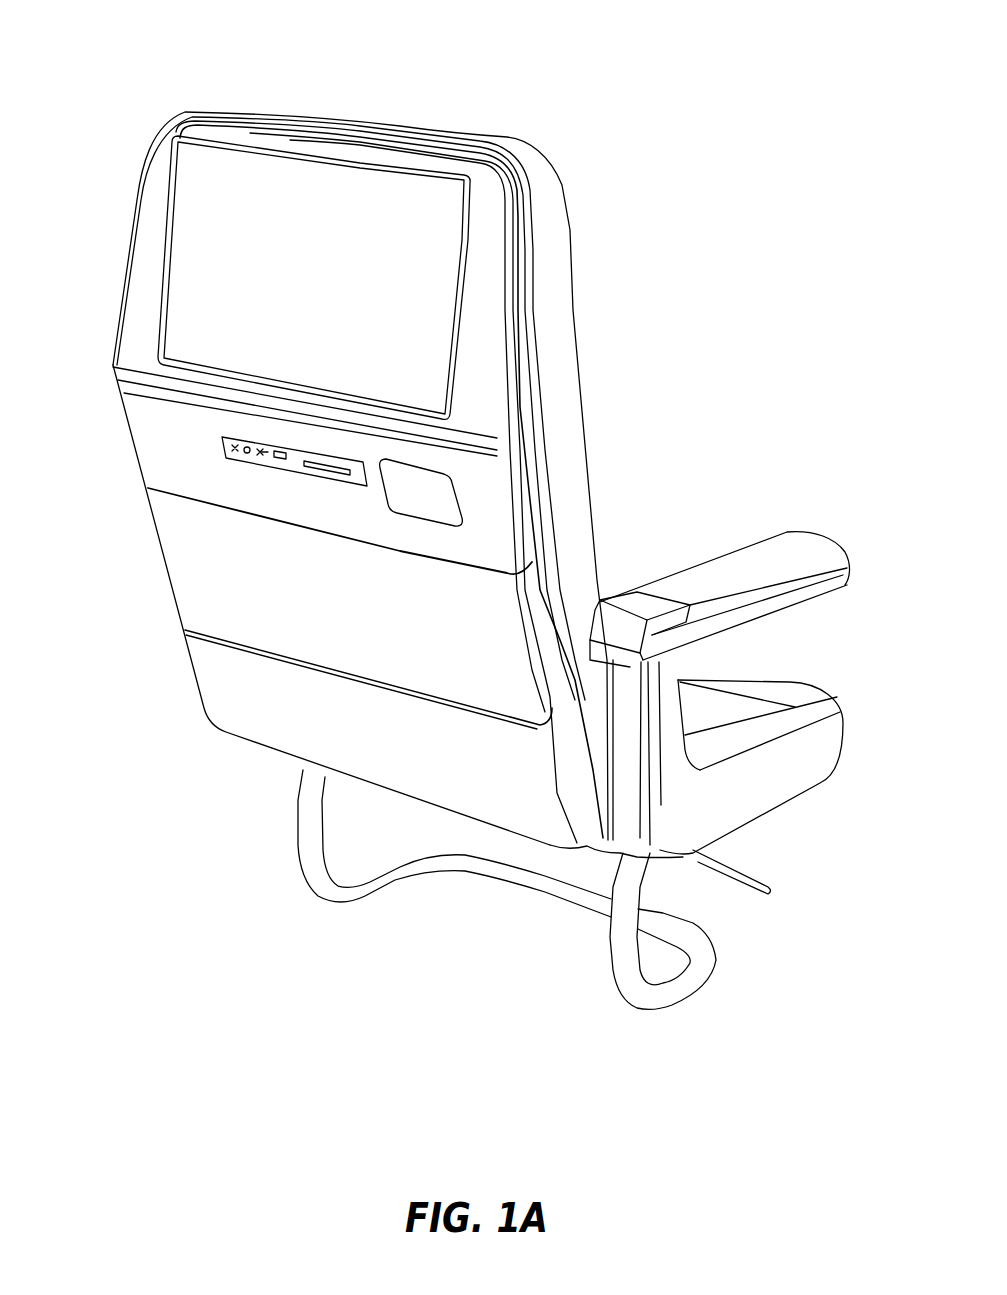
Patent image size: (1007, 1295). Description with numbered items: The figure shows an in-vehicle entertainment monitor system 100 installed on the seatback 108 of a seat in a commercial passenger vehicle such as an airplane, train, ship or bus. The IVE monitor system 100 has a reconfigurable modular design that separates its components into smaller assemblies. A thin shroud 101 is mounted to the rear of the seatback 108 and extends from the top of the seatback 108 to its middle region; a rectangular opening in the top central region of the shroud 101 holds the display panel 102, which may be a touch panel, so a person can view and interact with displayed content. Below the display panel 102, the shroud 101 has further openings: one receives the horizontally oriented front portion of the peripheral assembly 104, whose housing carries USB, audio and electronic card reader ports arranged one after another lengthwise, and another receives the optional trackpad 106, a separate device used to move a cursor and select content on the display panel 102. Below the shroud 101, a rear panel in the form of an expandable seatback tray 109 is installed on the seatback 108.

The IVE monitor system 100 is at (750, 88).
The shroud 101 is at (152, 210).
The display panel 102 is at (190, 284).
The peripheral assembly 104 is at (222, 443).
The trackpad 106 is at (457, 487).
The seatback 108 is at (519, 243).
The expandable seatback tray 109 is at (223, 570).